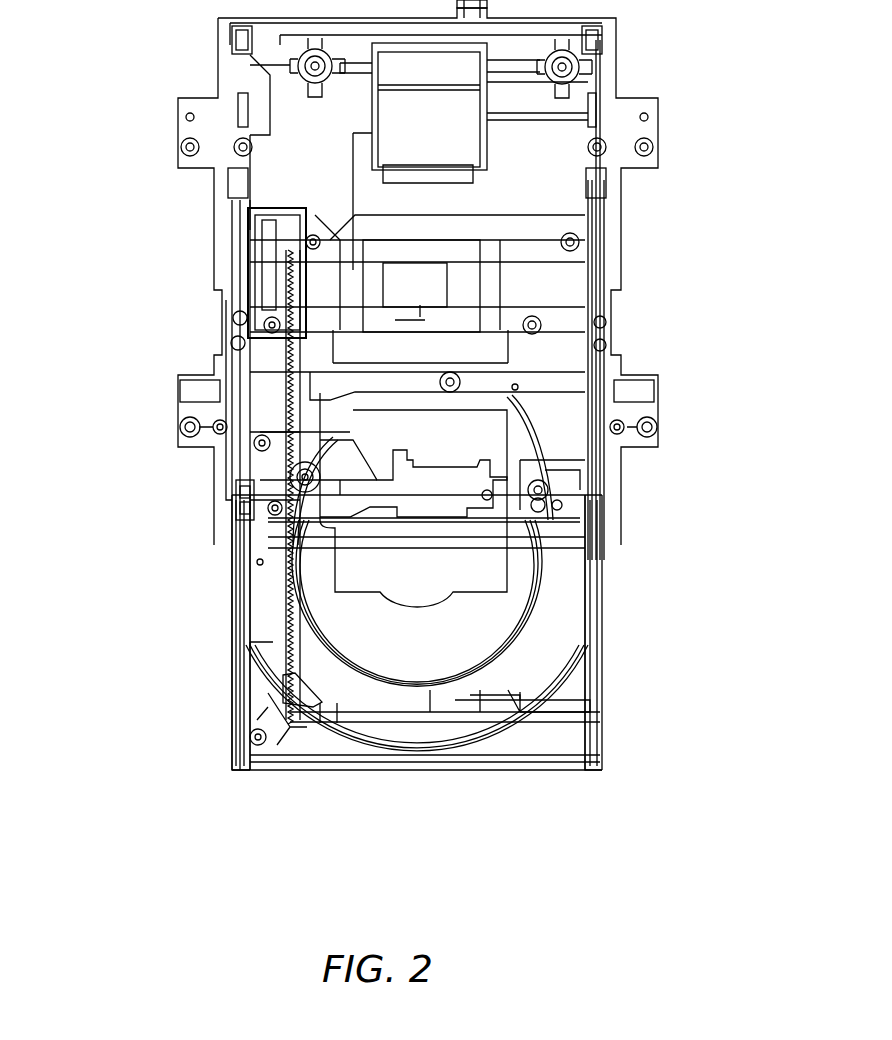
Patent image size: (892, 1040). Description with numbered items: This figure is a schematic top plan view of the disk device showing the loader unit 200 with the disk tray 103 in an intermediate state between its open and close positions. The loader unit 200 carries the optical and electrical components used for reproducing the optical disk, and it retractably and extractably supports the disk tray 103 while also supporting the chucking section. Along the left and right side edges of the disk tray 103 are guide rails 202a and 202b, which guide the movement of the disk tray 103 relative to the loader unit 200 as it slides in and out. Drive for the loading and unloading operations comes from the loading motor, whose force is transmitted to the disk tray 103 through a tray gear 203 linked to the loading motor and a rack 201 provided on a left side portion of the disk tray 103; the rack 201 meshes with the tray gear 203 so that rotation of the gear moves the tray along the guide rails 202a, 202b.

The loader unit 200 is at (625, 72).
The rack 201 is at (263, 610).
The tray gear 203 is at (257, 493).
The disk tray 103 is at (600, 718).
The guide rail 202a is at (233, 727).
The guide rail 202b is at (600, 755).